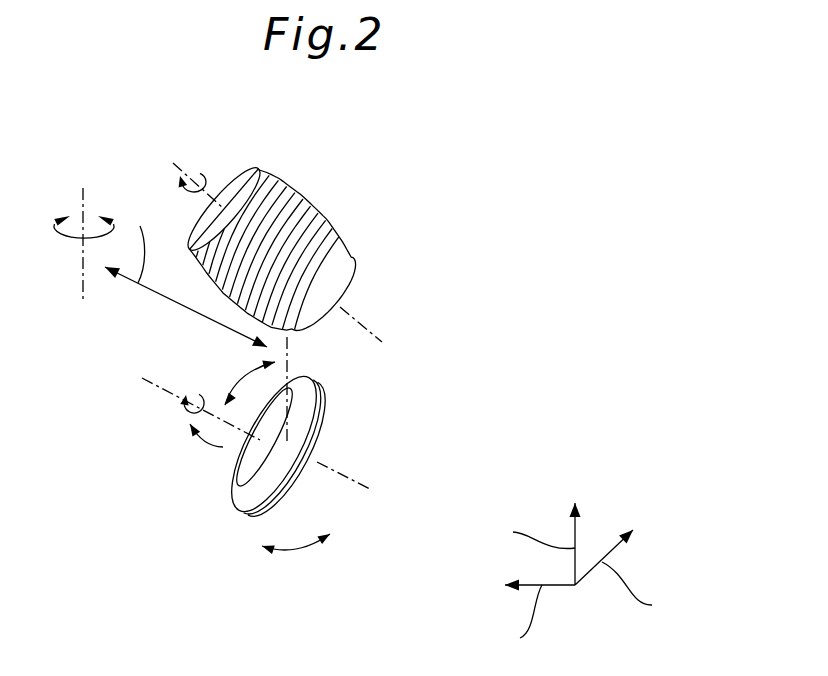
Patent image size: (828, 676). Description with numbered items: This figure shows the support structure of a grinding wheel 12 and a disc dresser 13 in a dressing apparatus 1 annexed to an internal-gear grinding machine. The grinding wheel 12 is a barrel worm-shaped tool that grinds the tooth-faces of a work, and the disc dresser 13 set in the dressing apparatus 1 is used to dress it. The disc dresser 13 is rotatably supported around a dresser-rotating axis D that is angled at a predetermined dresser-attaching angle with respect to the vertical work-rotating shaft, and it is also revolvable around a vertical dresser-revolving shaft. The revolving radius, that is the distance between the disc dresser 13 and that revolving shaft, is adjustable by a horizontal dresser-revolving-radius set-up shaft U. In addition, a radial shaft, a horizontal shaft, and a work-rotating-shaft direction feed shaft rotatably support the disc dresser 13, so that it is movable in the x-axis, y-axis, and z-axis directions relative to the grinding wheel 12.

The dressing apparatus 1 is at (455, 188).
The grinding wheel 12 is at (298, 186).
The disc dresser 13 is at (320, 407).